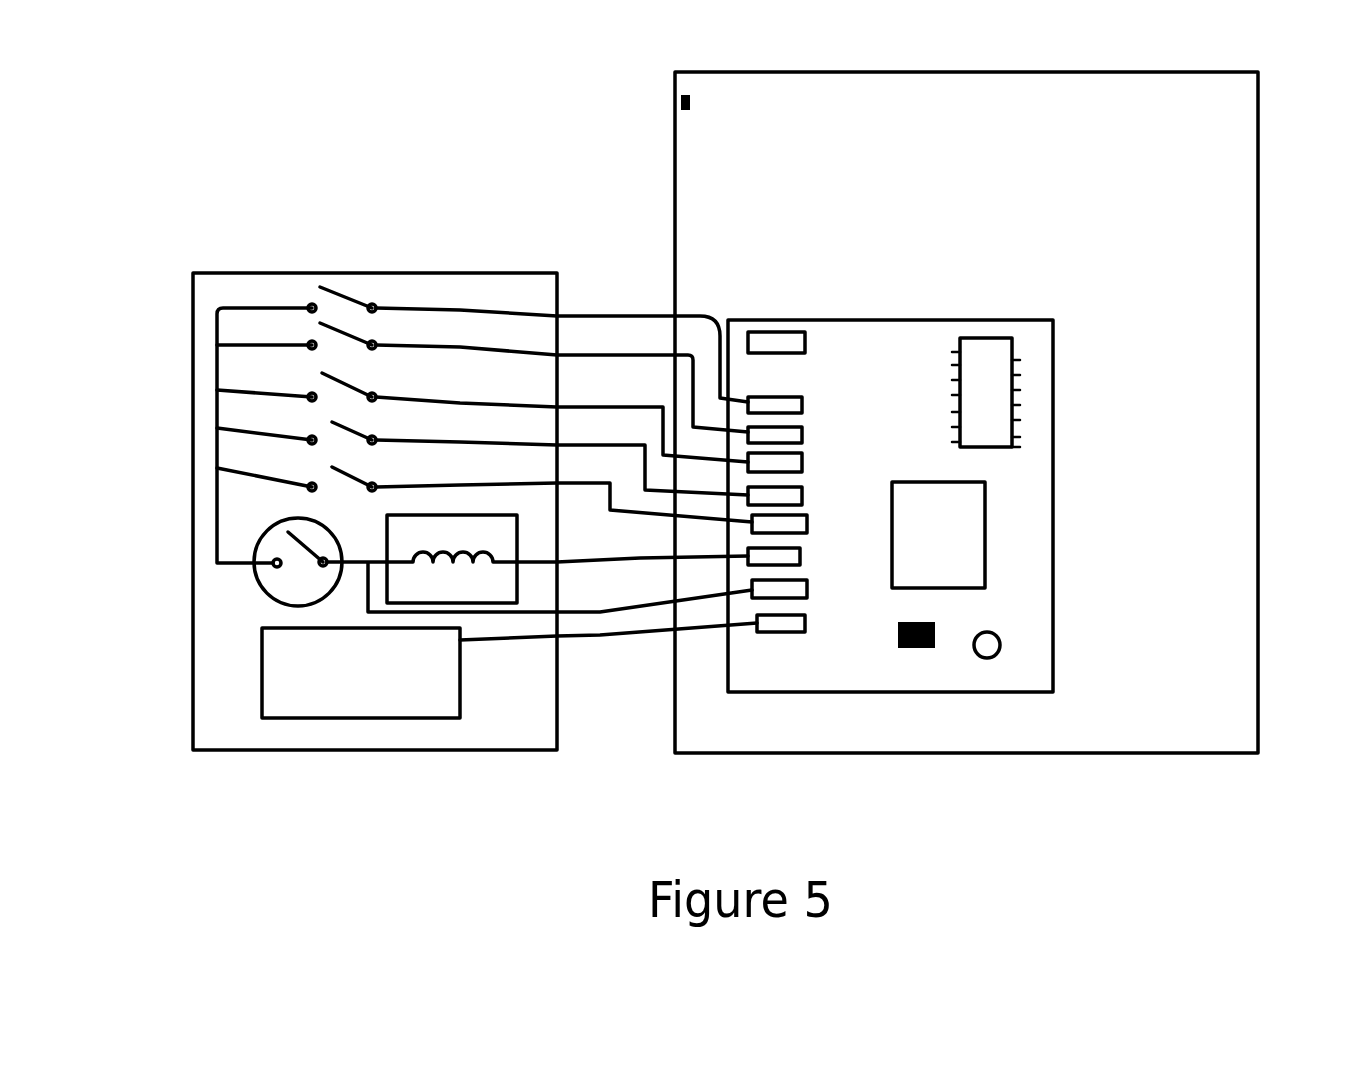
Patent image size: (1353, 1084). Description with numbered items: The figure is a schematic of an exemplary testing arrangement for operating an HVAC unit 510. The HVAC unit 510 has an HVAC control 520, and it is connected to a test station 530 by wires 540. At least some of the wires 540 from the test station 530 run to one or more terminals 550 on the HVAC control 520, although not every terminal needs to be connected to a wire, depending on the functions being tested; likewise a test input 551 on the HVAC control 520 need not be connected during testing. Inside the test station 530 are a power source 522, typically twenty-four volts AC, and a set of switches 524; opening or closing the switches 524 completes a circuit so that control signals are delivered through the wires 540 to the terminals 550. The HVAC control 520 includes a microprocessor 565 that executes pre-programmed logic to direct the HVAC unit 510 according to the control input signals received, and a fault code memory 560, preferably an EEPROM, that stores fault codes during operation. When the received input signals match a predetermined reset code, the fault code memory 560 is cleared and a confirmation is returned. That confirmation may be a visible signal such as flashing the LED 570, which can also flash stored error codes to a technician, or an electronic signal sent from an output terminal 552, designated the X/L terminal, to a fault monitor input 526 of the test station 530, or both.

The HVAC unit 510 is at (1260, 162).
The HVAC control 520 is at (1052, 510).
The power source 522 is at (517, 538).
The switches 524 is at (350, 300).
The fault monitor input 526 is at (260, 663).
The test station 530 is at (228, 752).
The wires 540 is at (617, 315).
The terminals 550 is at (795, 405).
The test input 551 is at (787, 330).
The output terminal 552 is at (787, 638).
The fault code memory 560 is at (990, 357).
The microprocessor 565 is at (985, 555).
The LED 570 is at (1000, 645).